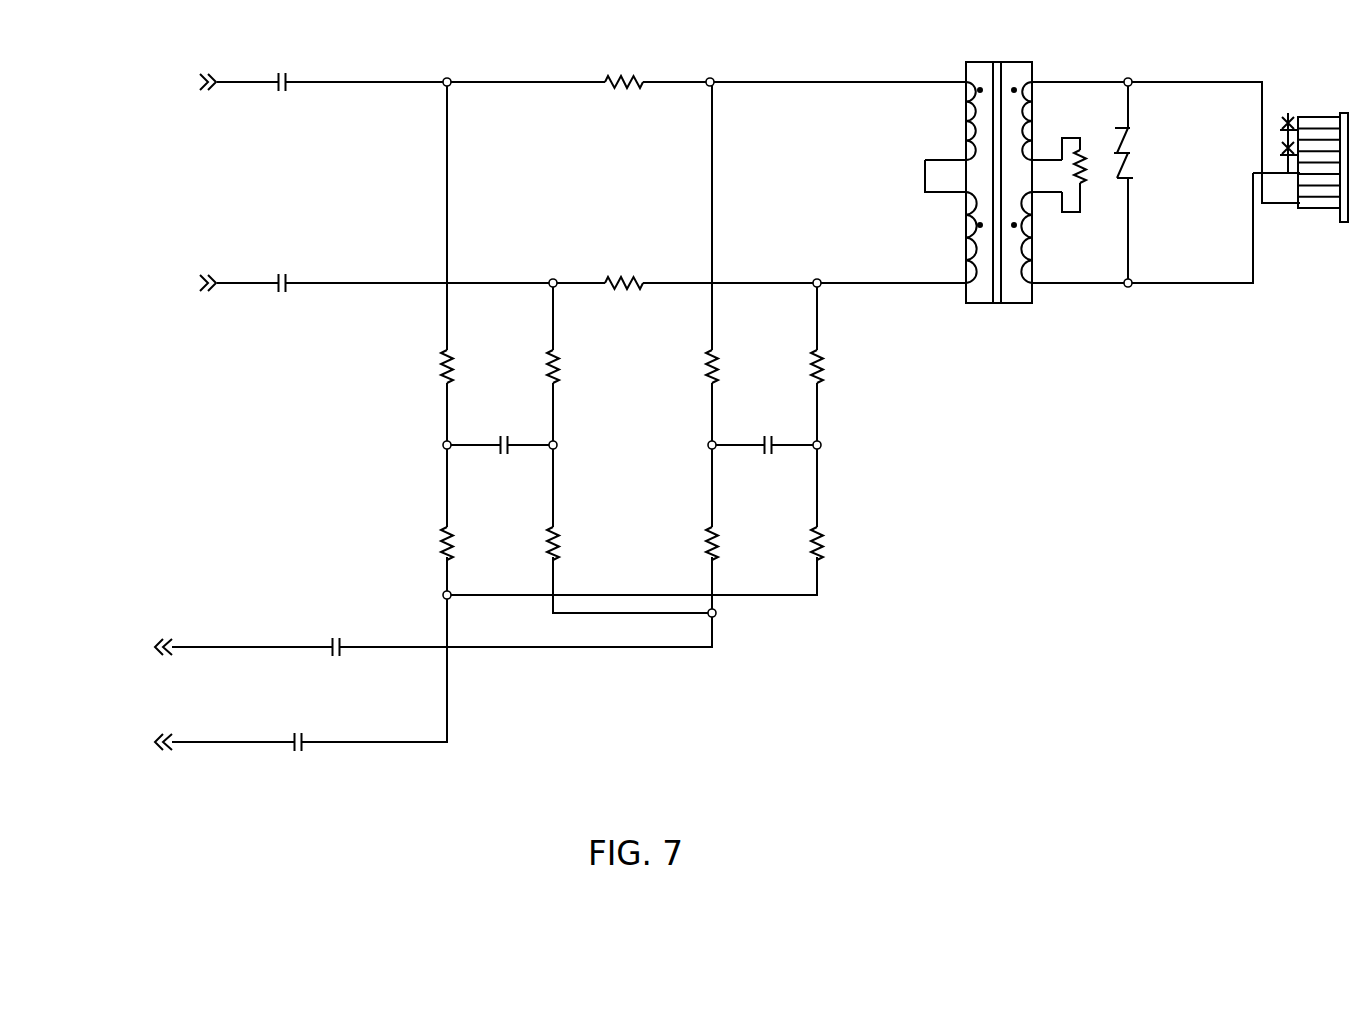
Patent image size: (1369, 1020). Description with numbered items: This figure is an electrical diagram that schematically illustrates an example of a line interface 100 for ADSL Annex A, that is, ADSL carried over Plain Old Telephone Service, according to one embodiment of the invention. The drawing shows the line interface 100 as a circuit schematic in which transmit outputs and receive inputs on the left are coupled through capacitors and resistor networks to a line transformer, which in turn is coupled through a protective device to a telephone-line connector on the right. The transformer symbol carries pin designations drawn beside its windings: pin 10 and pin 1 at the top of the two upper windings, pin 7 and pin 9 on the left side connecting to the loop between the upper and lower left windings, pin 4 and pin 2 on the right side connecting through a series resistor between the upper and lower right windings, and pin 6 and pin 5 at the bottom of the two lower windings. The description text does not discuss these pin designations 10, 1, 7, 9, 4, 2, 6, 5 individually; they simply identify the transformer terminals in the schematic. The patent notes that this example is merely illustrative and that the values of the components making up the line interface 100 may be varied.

The line interface 100 is at (1022, 501).
The transformer T1 pin 10 is at (948, 68).
The transformer T1 pin 1 is at (1046, 68).
The transformer T1 pin 7 is at (945, 147).
The transformer T1 pin 9 is at (945, 176).
The transformer T1 pin 4 is at (1047, 147).
The transformer T1 pin 2 is at (1047, 178).
The transformer T1 pin 6 is at (948, 272).
The transformer T1 pin 5 is at (1046, 272).